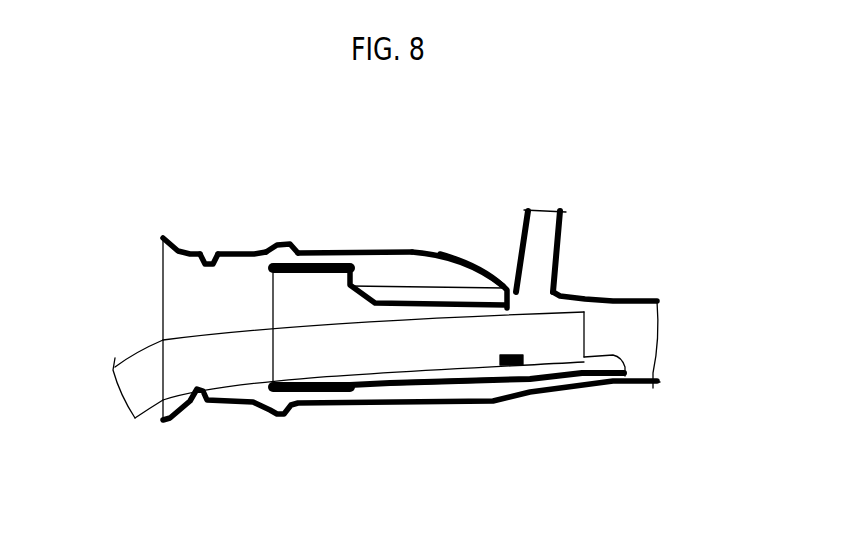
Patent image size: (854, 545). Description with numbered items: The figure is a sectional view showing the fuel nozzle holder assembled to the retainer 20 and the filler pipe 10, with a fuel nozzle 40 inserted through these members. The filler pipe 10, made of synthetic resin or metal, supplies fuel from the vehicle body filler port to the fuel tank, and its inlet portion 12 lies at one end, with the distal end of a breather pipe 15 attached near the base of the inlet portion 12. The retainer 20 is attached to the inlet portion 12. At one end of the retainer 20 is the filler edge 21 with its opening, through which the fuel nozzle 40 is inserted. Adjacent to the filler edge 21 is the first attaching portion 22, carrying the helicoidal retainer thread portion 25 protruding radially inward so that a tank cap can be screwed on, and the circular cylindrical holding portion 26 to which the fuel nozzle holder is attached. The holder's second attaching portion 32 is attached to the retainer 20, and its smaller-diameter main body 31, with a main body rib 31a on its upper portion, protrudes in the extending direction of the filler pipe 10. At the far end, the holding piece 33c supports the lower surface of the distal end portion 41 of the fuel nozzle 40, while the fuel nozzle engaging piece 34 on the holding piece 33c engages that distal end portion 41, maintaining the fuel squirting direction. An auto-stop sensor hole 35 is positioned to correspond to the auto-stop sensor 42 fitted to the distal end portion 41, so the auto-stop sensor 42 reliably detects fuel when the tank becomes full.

The filler pipe 10 is at (607, 299).
The inlet portion 12 is at (358, 252).
The breather pipe 15 is at (567, 260).
The retainer 20 is at (220, 406).
The filler edge 21 is at (164, 233).
The first attaching portion 22 is at (238, 252).
The retainer thread portion 25 is at (210, 262).
The holding portion 26 is at (328, 275).
The main body 31 is at (393, 298).
The main body rib 31a is at (480, 285).
The second attaching portion 32 is at (285, 242).
The holding piece 33c is at (575, 390).
The fuel nozzle engaging piece 34 is at (610, 375).
The auto-stop sensor hole 35 is at (493, 384).
The fuel nozzle 40 is at (147, 419).
The distal end portion 41 is at (442, 333).
The auto-stop sensor 42 is at (527, 383).